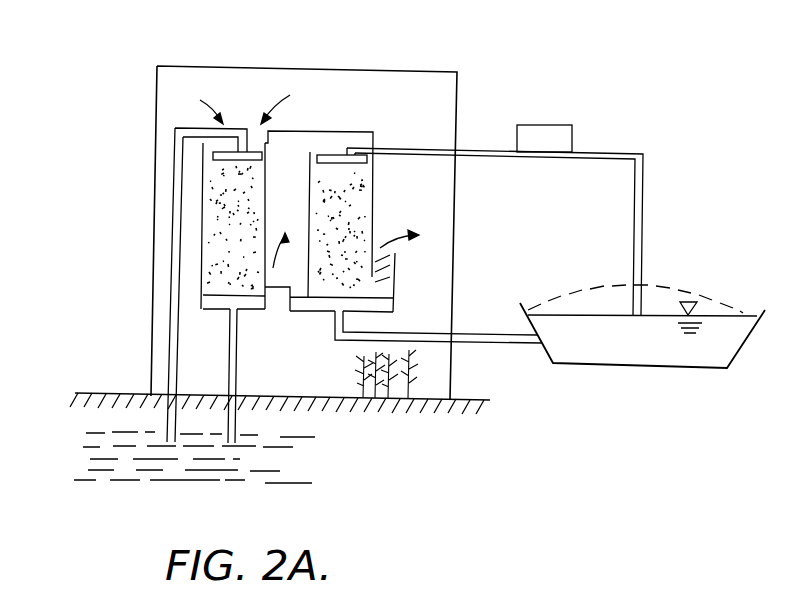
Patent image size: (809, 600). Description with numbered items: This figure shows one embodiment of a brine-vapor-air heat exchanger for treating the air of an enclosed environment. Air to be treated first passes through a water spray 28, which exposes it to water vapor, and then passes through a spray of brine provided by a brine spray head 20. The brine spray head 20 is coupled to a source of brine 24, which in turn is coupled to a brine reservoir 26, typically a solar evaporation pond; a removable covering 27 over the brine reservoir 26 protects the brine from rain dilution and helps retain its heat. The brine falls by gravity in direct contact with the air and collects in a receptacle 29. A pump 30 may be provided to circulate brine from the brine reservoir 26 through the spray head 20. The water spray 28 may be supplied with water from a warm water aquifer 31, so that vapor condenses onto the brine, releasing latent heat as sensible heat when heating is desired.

The brine spray head 20 is at (352, 158).
The source of brine 24 is at (647, 220).
The brine reservoir 26 is at (715, 328).
The removable covering 27 is at (648, 287).
The water spray 28 is at (247, 150).
The receptacle 29 is at (383, 305).
The pump 30 is at (560, 138).
The warm water aquifer 31 is at (250, 472).